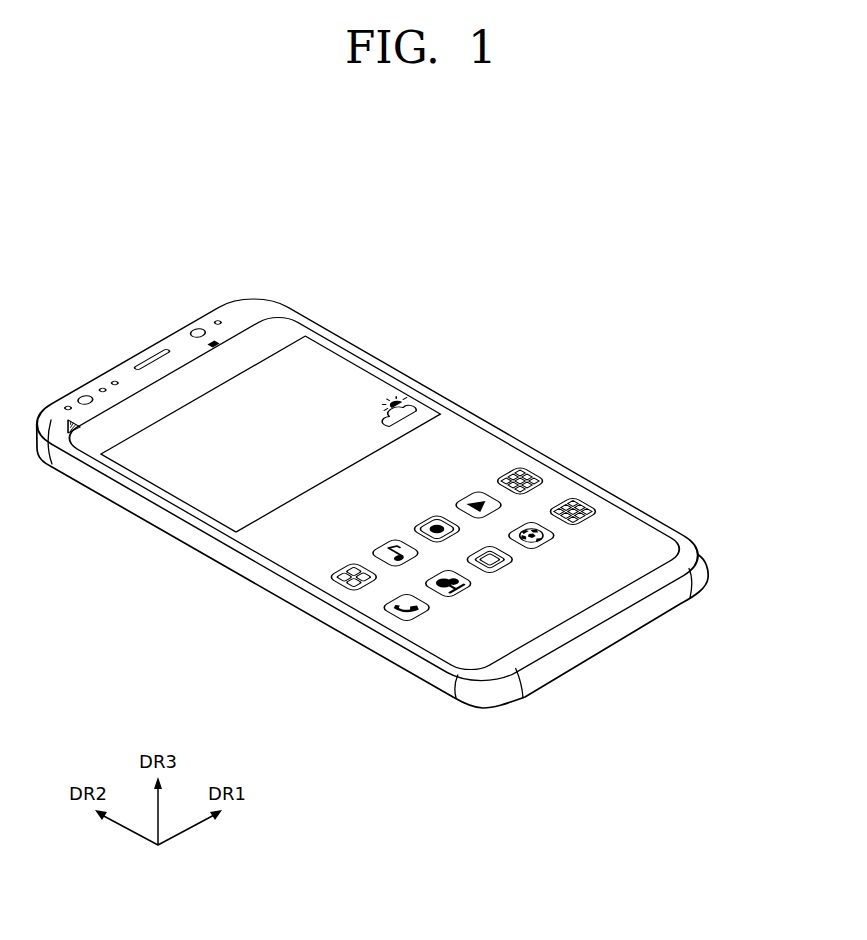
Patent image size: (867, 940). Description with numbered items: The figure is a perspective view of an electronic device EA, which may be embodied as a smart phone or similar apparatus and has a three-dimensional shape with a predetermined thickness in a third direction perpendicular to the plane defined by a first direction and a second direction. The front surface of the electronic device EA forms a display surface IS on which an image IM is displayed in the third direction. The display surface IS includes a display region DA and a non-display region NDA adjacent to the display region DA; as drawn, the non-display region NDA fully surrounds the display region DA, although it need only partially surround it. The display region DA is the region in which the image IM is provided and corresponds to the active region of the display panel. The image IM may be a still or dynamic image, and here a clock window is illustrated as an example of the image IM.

The electronic device EA is at (611, 349).
The display surface IS is at (430, 277).
The non-display region NDA is at (425, 392).
The display region DA is at (472, 422).
The image IM is at (362, 369).